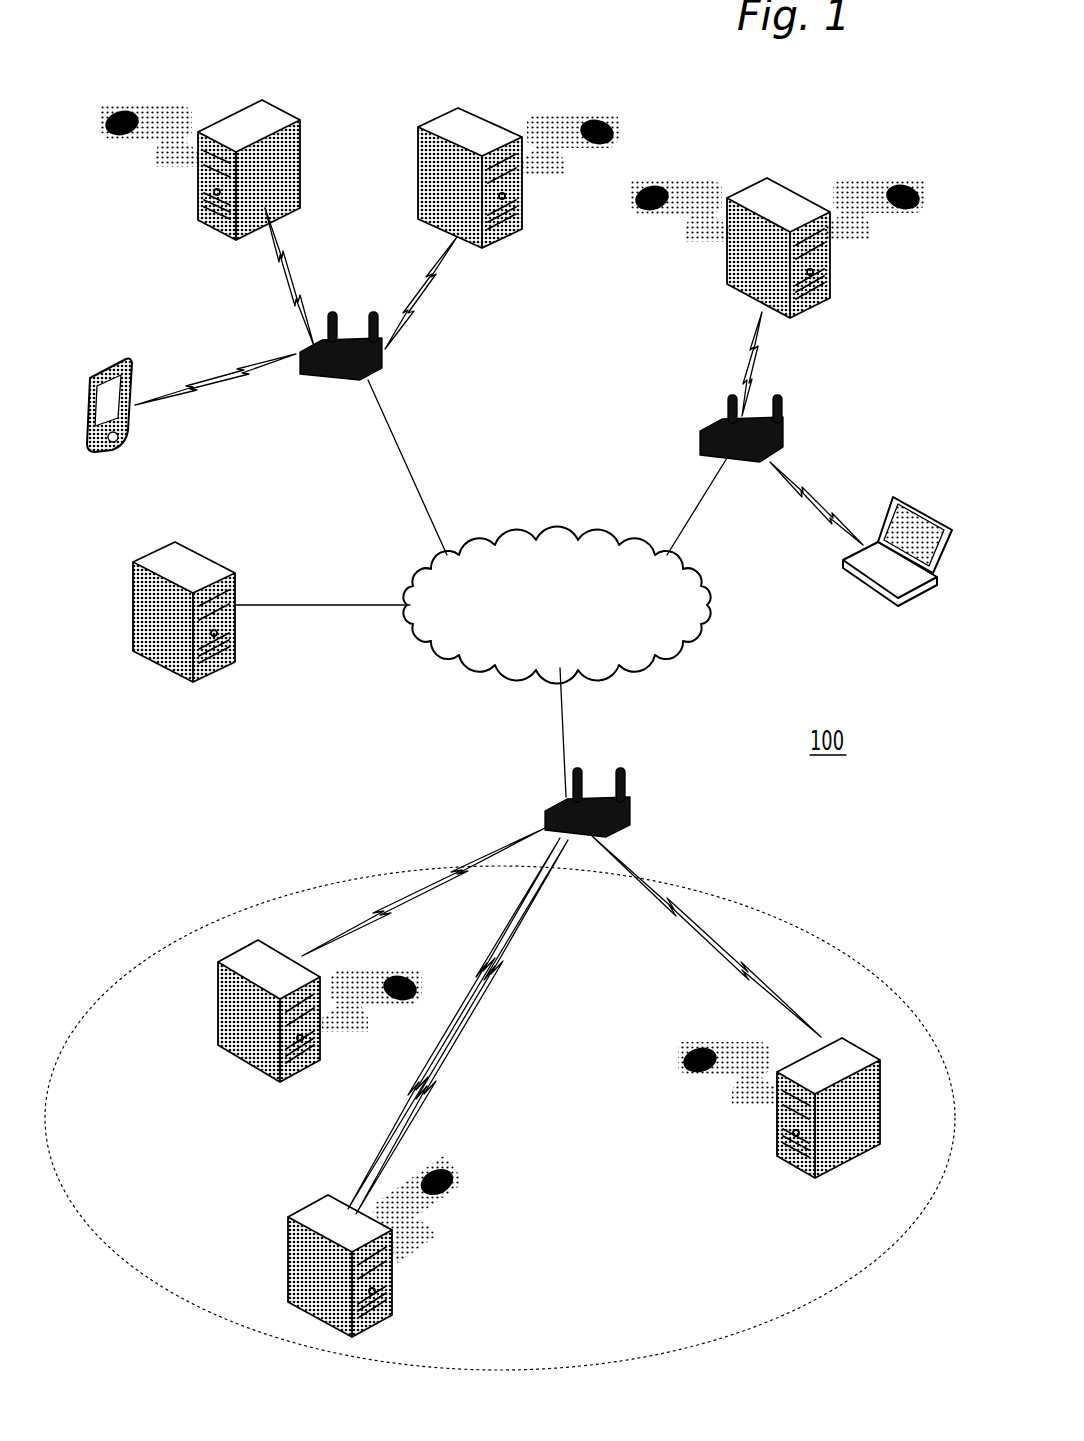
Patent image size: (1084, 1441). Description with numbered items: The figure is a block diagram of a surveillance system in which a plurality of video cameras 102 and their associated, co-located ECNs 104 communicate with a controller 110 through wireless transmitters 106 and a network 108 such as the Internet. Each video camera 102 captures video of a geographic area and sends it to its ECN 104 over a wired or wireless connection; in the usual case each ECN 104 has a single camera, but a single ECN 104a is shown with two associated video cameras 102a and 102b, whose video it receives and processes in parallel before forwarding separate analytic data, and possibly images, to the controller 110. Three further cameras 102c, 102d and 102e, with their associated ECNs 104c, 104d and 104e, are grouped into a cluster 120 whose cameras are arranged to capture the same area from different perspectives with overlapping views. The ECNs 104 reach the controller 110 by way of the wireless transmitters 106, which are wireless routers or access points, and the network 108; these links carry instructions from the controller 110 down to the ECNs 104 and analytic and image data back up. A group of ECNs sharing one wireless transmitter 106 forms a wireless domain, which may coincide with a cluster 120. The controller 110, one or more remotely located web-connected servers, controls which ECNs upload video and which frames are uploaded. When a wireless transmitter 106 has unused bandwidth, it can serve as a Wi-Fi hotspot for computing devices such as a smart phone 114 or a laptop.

The video camera 102 is at (150, 108).
The video camera 102a is at (662, 185).
The video camera 102b is at (898, 184).
The video camera 102c is at (390, 968).
The video camera 102d is at (712, 1042).
The video camera 102e is at (443, 1200).
The ECN 104 is at (282, 110).
The ECN 104a is at (832, 302).
The ECN 104c is at (225, 1005).
The ECN 104d is at (882, 1120).
The ECN 104e is at (306, 1212).
The wireless transmitter 106 is at (342, 380).
The network 108 is at (577, 613).
The controller 110 is at (133, 586).
The smart phone 114 is at (114, 368).
The cluster 120 is at (845, 952).